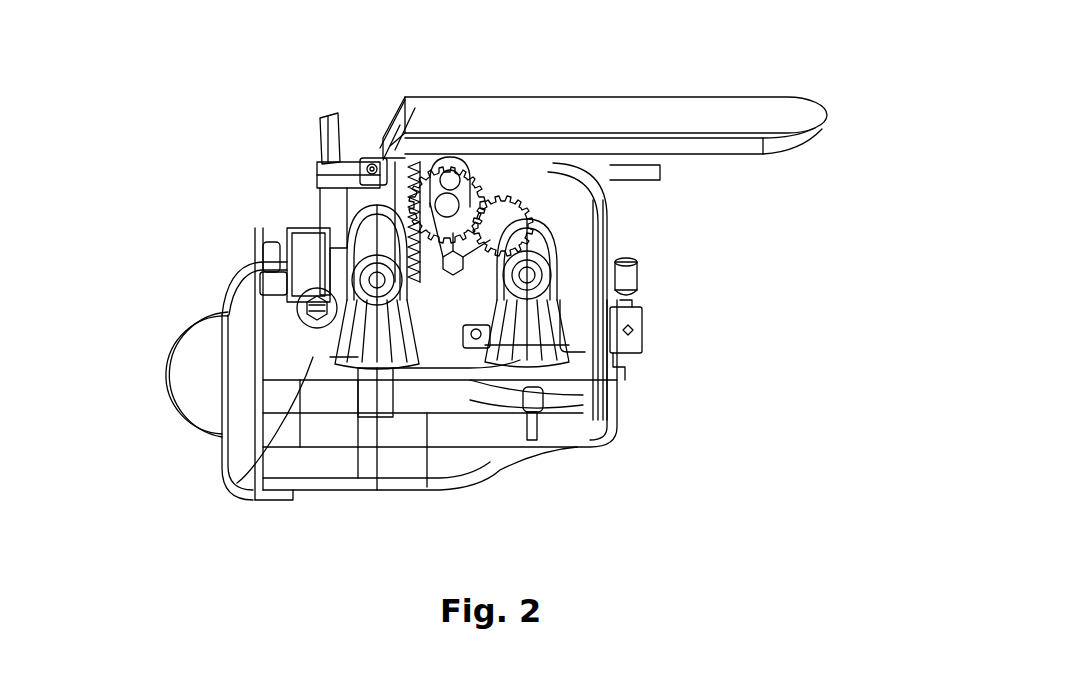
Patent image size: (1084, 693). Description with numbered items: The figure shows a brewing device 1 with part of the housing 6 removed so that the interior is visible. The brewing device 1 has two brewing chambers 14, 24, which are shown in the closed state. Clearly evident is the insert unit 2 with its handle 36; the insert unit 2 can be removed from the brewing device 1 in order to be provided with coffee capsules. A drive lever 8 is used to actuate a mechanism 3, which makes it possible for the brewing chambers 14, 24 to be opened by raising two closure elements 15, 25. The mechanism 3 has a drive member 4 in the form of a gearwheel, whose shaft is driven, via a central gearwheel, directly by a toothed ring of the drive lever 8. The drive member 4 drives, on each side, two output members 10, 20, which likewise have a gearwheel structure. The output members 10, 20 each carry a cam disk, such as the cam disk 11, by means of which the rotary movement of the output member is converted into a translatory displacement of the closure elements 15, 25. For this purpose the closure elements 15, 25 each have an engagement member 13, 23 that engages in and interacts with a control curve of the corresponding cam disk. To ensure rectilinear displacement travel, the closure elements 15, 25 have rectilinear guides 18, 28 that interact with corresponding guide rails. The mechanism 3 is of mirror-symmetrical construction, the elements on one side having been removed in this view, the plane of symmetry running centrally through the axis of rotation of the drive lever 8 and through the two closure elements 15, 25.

The brewing device 1 is at (190, 150).
The insert unit 2 is at (237, 407).
The mechanism 3 is at (490, 203).
The drive member 4 is at (500, 196).
The housing 6 is at (613, 222).
The drive lever 8 is at (757, 115).
The output member 10 is at (552, 217).
The cam disk 11 is at (623, 238).
The engagement member 13 is at (555, 325).
The brewing chamber 14 is at (539, 431).
The closure element 15 is at (543, 367).
The rectilinear guide 18 is at (643, 328).
The output member 20 is at (318, 222).
The engagement member 23 is at (353, 330).
The brewing chamber 24 is at (348, 437).
The closure element 25 is at (225, 440).
The rectilinear guide 28 is at (225, 318).
The handle 36 is at (193, 357).